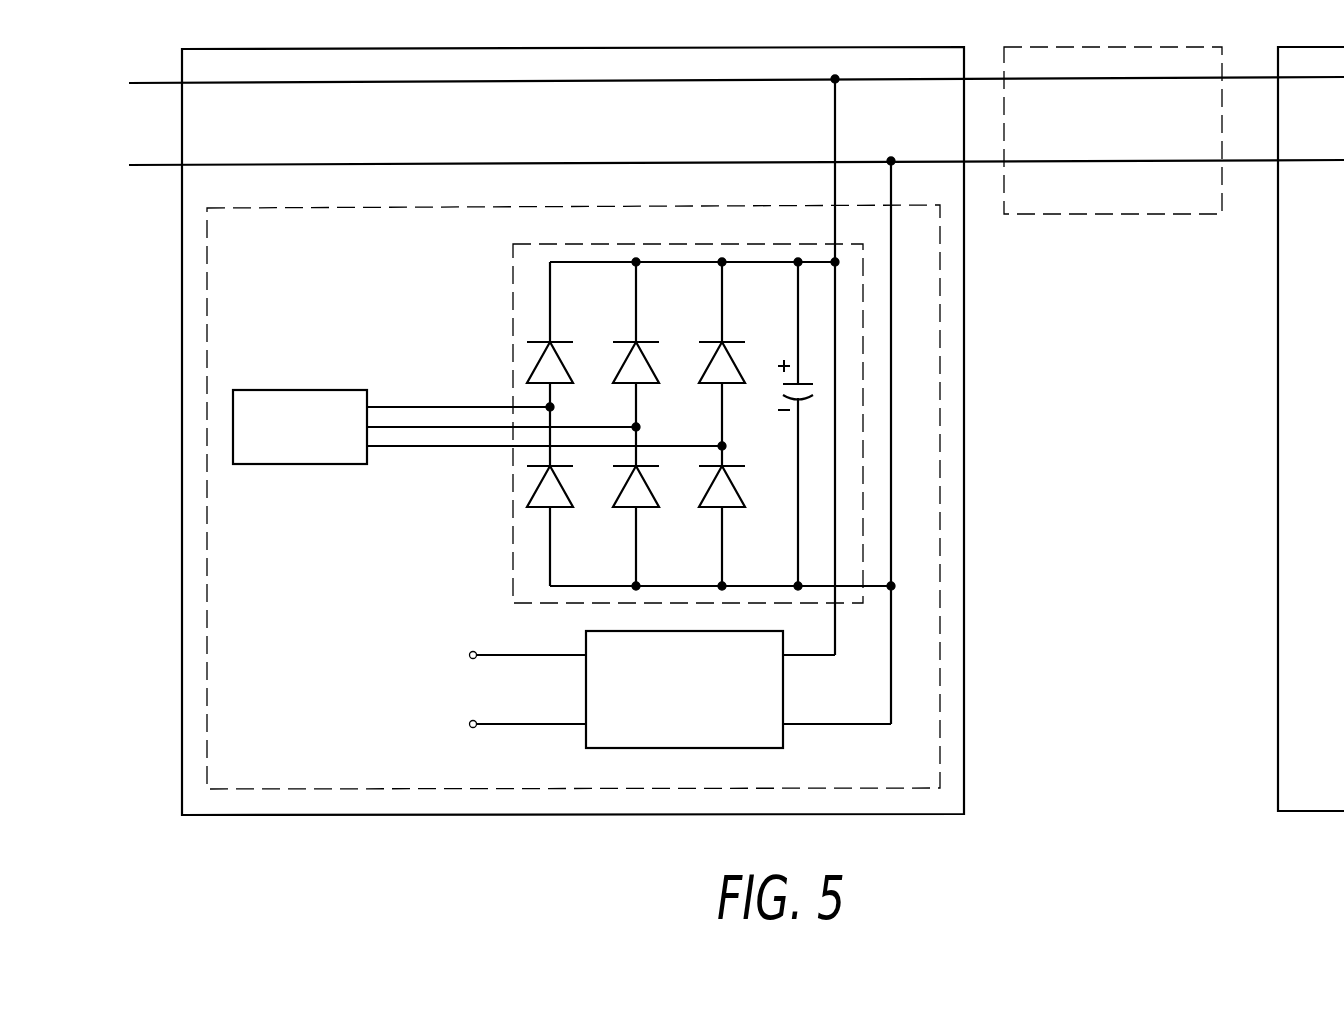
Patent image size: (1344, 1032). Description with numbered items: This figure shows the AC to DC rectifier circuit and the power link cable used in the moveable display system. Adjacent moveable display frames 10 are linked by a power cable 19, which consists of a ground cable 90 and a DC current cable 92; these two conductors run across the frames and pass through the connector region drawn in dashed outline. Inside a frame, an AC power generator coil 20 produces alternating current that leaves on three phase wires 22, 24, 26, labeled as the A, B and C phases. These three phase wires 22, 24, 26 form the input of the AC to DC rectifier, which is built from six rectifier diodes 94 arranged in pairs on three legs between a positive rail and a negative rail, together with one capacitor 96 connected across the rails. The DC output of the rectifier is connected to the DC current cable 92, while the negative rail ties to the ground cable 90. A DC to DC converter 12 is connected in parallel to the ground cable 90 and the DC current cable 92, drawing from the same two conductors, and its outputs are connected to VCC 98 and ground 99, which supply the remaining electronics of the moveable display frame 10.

The moveable display frame 10 is at (965, 729).
The DC to DC converter 12 is at (738, 689).
The power cable 19 is at (1103, 215).
The AC power generator coil 20 is at (287, 390).
The phase wire 22 is at (442, 408).
The phase wire 24 is at (458, 428).
The phase wire 26 is at (476, 447).
The ground cable 90 is at (1098, 160).
The DC current cable 92 is at (1091, 80).
The rectifier diode 94 is at (560, 340).
The capacitor 96 is at (818, 436).
The VCC 98 is at (469, 655).
The ground 99 is at (469, 724).